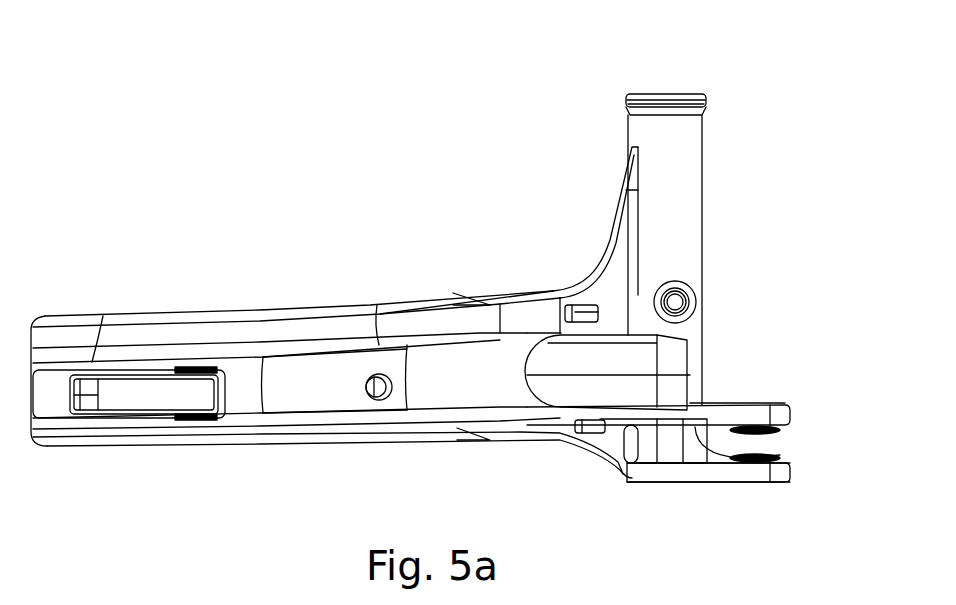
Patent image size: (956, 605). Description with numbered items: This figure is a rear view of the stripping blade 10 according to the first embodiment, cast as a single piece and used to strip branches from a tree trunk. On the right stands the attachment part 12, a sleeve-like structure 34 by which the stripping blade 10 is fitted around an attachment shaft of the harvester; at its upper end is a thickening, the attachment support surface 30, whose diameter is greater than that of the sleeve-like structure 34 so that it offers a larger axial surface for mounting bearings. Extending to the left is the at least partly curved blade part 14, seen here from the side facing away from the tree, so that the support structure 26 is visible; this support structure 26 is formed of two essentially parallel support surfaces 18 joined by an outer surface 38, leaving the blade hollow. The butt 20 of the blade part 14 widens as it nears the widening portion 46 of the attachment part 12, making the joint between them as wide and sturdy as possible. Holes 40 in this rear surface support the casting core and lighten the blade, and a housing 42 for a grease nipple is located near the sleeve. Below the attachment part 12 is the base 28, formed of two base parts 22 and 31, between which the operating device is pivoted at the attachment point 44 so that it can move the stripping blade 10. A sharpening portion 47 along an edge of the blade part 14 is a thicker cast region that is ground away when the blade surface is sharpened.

The stripping blade 10 is at (338, 115).
The attachment part 12 is at (740, 190).
The blade part 14 is at (300, 278).
The support surfaces 18 is at (197, 372).
The butt 20 is at (513, 303).
The base part 22 is at (750, 472).
The support structure 26 is at (612, 362).
The base 28 is at (192, 420).
The attachment support surface 30 is at (655, 95).
The base part 31 is at (792, 404).
The sleeve-like structure 34 is at (688, 238).
The outer surface 38 is at (342, 403).
The holes 40 is at (397, 388).
The housing for a grease nipple 42 is at (698, 318).
The attachment point 44 is at (788, 404).
The widening portion 46 is at (600, 187).
The sharpening portion 47 is at (80, 285).